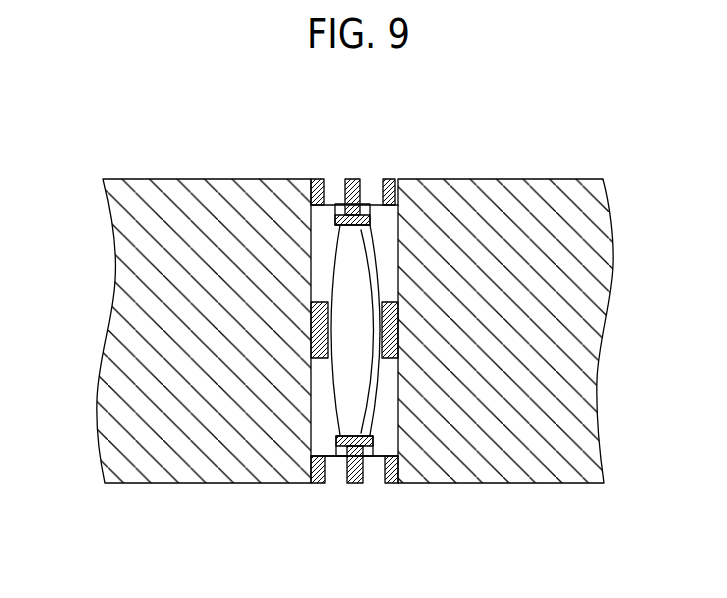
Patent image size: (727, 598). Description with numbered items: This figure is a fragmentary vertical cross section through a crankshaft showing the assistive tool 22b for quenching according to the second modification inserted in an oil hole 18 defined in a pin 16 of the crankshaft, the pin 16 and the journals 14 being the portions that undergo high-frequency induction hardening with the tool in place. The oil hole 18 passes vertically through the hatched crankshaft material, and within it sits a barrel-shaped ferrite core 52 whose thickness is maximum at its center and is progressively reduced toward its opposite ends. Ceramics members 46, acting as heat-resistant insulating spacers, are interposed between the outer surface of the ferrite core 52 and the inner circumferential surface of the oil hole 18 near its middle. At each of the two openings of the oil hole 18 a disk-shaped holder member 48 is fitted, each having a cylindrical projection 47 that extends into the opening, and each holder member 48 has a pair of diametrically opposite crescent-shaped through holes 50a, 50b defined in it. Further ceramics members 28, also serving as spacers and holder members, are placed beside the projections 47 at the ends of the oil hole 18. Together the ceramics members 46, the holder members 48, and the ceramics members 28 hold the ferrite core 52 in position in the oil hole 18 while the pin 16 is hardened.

The pin 16 is at (204, 292).
The journal 14 is at (175, 178).
The oil hole 18 is at (393, 245).
The assistive tool 22b is at (392, 168).
The cylindrical projection 47 is at (311, 203).
The ceramics member 28 is at (398, 219).
The holder member 48 is at (358, 179).
The ceramics member 46 is at (311, 334).
The barrel-shaped ferrite core 52 is at (363, 373).
The crescent-shaped through hole 50a is at (337, 472).
The crescent-shaped through hole 50b is at (377, 473).